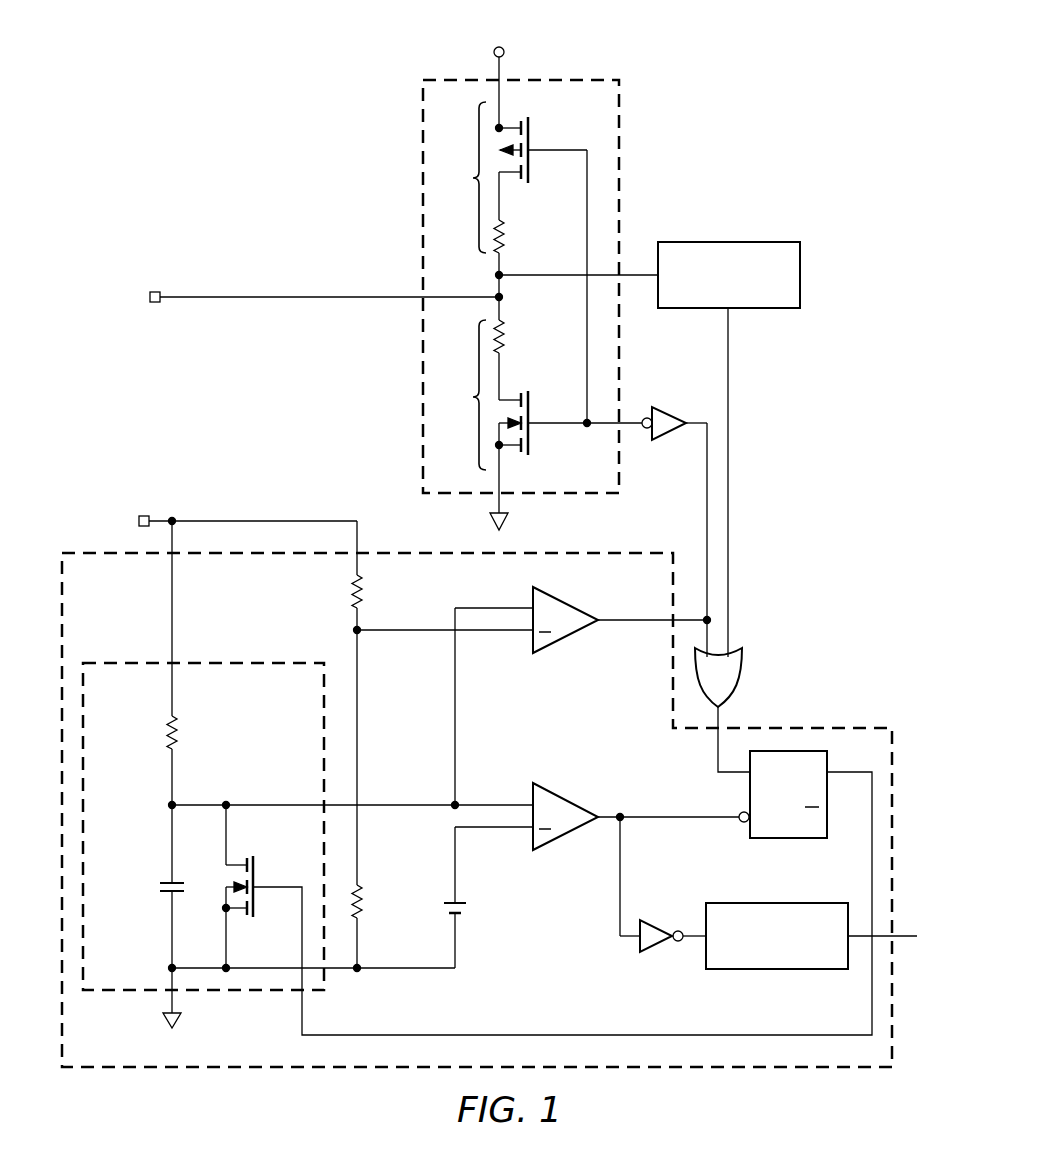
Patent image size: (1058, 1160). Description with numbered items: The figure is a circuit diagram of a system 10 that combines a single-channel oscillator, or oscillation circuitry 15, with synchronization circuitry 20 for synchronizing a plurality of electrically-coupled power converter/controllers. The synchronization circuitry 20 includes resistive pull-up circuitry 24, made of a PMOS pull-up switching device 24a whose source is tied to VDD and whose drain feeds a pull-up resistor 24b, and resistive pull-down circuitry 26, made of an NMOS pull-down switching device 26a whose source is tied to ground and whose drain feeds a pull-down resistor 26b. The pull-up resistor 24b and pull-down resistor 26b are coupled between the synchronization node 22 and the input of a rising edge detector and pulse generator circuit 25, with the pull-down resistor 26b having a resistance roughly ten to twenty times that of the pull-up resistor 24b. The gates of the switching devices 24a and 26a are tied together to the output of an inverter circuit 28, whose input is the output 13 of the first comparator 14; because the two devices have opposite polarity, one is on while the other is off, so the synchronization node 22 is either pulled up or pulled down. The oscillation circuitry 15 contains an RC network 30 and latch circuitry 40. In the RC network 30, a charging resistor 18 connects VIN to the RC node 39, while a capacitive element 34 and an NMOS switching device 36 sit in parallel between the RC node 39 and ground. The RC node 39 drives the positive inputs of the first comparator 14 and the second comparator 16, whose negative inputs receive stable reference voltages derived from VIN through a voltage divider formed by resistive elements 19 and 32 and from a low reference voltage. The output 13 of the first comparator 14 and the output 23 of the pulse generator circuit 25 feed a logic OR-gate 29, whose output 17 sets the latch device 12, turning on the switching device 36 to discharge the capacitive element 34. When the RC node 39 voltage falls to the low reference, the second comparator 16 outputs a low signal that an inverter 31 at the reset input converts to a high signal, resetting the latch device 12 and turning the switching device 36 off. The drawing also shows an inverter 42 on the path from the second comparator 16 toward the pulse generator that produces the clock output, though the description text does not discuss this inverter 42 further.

The system 10 is at (278, 162).
The latch device 12 is at (790, 838).
The output of the first comparator 13 is at (628, 622).
The first comparator 14 is at (568, 640).
The oscillation circuitry 15 is at (722, 1068).
The second comparator 16 is at (566, 796).
The output of the logic OR-gate 17 is at (708, 760).
The charging resistor 18 is at (165, 728).
The resistive element 19 is at (364, 590).
The synchronization circuitry 20 is at (620, 163).
The synchronization node 22 is at (152, 290).
The output of the rising edge detector and pulse generator circuit 23 is at (730, 497).
The resistive pull-up circuitry 24 is at (518, 175).
The pull-up switching device 24a is at (532, 135).
The pull-up resistor 24b is at (506, 236).
The rising edge detector and pulse generator circuit 25 is at (738, 242).
The resistive pull-down circuitry 26 is at (541, 416).
The pull-down switching device 26a is at (532, 440).
The pull-down resistor 26b is at (506, 340).
The inverter circuit 28 is at (662, 412).
The logic OR-gate 29 is at (742, 685).
The RC network 30 is at (238, 660).
The inverter 31 is at (742, 824).
The resistive element 32 is at (366, 896).
The capacitive element 34 is at (158, 888).
The semiconductor switching device 36 is at (257, 868).
The RC node 39 is at (178, 802).
The latch circuitry 40 is at (780, 969).
The inverter 42 is at (668, 948).